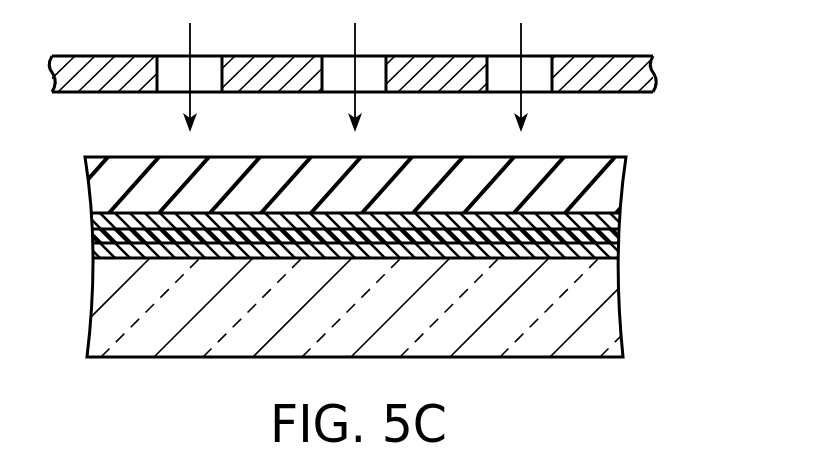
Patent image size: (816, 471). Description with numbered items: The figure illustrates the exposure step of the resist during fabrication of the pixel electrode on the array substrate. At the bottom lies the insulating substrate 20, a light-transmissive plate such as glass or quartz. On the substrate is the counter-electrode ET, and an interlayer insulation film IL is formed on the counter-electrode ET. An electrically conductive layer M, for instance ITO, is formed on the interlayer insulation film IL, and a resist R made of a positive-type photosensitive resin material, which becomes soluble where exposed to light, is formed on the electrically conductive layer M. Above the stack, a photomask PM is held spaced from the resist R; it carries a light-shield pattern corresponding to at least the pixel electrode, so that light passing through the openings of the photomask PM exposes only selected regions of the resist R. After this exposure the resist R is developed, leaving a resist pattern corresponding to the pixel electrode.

The photomask PM is at (654, 78).
The resist R is at (102, 192).
The electrically conductive layer M is at (612, 215).
The interlayer insulation film IL is at (608, 236).
The counter-electrode ET is at (612, 255).
The insulating substrate 20 is at (608, 335).